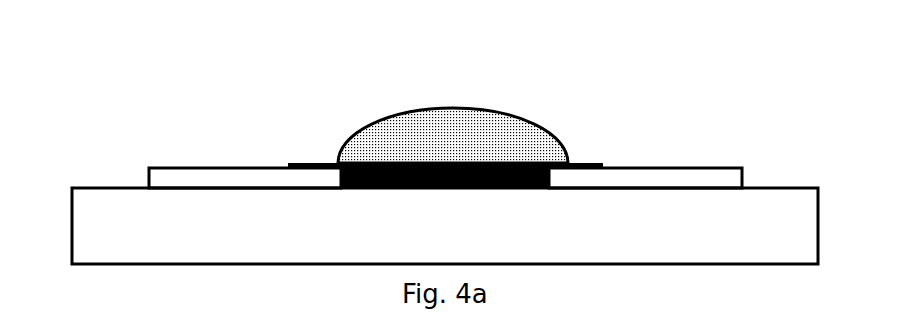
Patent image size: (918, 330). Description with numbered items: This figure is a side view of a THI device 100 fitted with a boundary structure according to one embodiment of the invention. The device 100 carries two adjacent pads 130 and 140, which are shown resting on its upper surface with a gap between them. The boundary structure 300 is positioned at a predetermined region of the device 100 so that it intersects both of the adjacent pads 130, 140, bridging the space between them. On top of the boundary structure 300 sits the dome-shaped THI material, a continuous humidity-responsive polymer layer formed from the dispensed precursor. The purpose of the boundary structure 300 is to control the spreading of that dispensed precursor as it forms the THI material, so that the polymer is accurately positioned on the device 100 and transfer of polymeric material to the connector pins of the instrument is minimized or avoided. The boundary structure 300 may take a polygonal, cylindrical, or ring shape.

The device 100 is at (108, 82).
The pad 130 is at (165, 173).
The pad 140 is at (713, 174).
The boundary structure 300 is at (553, 162).